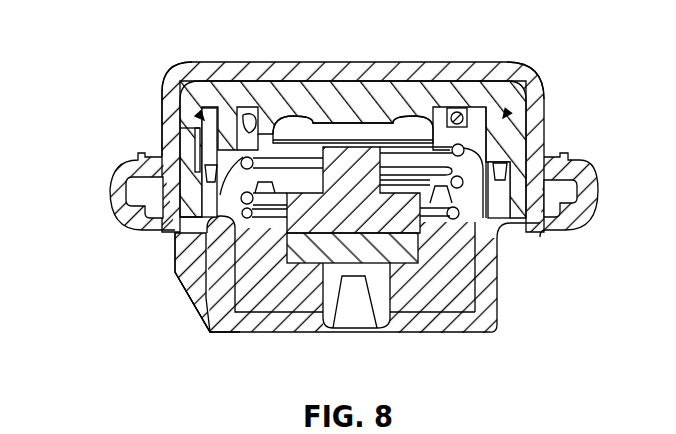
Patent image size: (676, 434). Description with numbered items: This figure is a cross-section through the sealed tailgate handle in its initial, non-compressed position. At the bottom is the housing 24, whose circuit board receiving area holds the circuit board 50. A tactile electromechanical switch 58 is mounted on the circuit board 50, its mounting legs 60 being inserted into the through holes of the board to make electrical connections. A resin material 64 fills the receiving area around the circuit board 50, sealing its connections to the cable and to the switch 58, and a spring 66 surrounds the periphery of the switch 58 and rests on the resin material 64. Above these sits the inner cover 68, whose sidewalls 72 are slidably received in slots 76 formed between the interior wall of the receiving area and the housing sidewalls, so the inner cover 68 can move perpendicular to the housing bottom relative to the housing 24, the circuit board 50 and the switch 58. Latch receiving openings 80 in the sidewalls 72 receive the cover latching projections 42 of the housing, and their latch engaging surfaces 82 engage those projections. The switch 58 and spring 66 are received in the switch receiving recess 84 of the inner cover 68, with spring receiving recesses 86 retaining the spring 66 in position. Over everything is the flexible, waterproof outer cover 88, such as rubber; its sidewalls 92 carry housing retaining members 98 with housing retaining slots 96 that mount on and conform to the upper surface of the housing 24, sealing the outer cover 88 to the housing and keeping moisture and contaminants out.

The housing 24 is at (472, 334).
The cover latching projections 42 is at (203, 106).
The circuit board 50 is at (386, 250).
The tactile electromechanical switch 58 is at (427, 230).
The mounting legs 60 is at (348, 140).
The resin material 64 is at (270, 313).
The spring 66 is at (211, 334).
The inner cover 68 is at (300, 93).
The sidewalls 72 is at (500, 123).
The slots 76 is at (460, 217).
The latch receiving openings 80 is at (191, 105).
The latch engaging surfaces 82 is at (188, 226).
The switch receiving recess 84 is at (202, 297).
The spring receiving recesses 86 is at (506, 68).
The outer cover 88 is at (531, 66).
The sidewalls 92 is at (161, 118).
The housing retaining slots 96 is at (580, 160).
The housing retaining members 98 is at (111, 204).